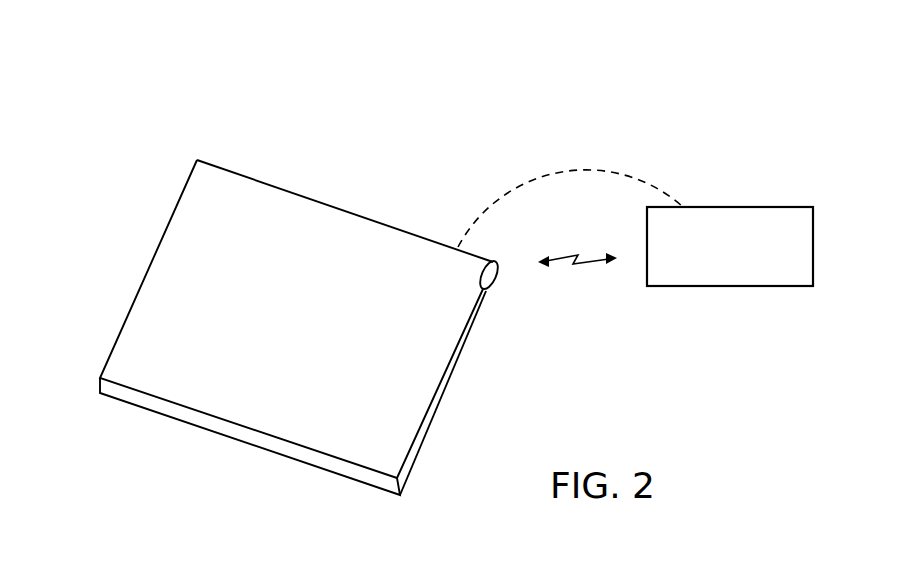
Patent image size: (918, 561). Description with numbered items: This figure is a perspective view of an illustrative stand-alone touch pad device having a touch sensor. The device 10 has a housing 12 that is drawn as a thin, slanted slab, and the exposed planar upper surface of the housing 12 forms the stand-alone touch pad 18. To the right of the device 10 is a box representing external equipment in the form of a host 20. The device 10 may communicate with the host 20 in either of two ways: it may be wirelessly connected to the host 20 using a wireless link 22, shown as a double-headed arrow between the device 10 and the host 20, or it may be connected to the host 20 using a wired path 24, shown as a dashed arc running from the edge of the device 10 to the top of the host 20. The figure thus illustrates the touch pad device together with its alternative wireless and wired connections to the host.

The device 10 is at (126, 198).
The stand-alone touch pad 18 is at (151, 309).
The housing 12 is at (100, 378).
The wired path 24 is at (596, 170).
The wireless link 22 is at (578, 288).
The host 20 is at (689, 281).